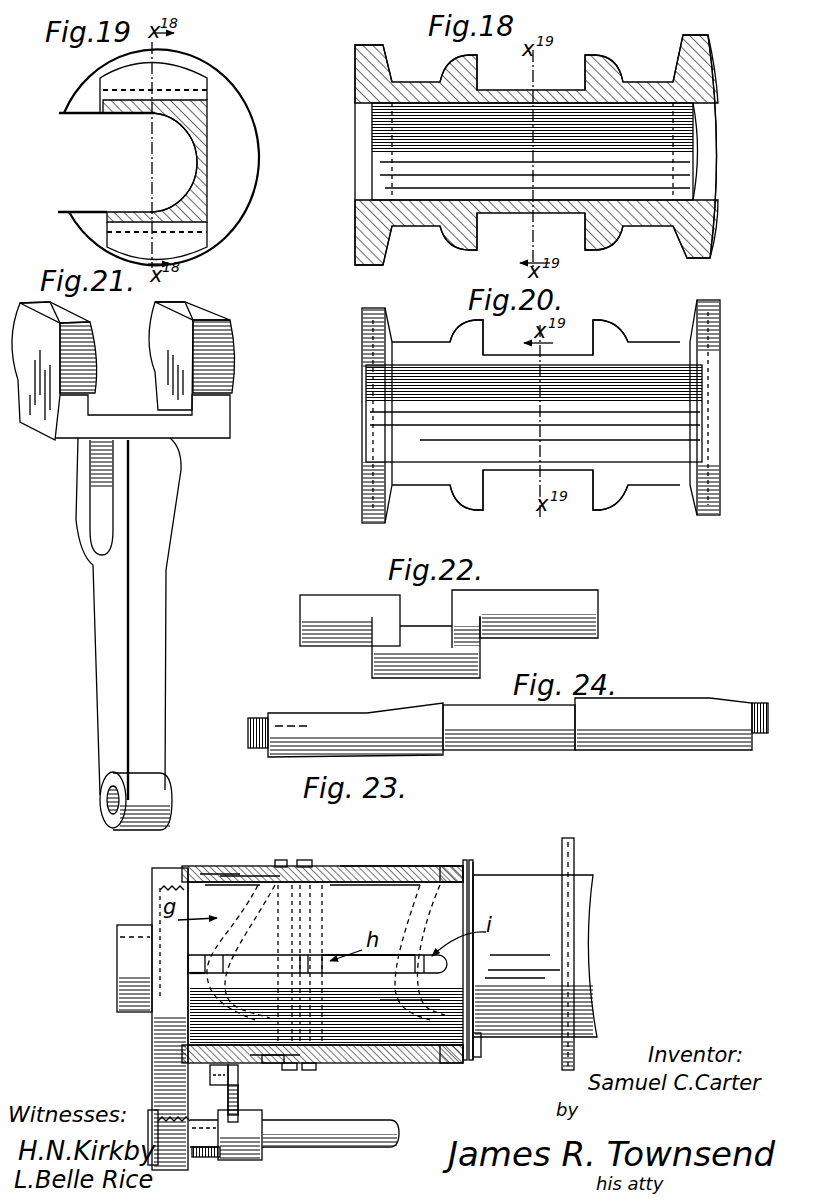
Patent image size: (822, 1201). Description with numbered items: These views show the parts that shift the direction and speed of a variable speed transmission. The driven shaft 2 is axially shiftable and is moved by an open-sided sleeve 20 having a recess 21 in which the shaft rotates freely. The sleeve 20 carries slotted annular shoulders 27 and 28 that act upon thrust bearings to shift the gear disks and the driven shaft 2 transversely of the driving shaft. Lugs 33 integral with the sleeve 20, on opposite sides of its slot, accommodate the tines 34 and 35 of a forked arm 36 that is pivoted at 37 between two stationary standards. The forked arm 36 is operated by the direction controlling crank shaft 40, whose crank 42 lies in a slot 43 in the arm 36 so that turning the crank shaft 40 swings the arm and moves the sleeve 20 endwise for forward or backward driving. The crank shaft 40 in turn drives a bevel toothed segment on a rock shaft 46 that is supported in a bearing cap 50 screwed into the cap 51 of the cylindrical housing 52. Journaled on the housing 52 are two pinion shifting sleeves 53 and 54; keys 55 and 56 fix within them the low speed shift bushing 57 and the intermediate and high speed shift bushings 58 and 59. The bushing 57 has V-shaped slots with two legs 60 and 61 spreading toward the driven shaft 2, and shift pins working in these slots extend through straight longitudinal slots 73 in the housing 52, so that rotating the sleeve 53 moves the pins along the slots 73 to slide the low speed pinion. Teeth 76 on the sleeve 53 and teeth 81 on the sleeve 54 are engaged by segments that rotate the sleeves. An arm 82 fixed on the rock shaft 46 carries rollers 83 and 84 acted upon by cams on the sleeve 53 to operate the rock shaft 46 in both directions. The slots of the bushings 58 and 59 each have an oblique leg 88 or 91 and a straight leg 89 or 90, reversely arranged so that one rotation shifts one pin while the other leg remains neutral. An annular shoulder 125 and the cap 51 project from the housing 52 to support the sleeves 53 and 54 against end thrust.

In FIG. 24, the driven shaft 2 is at (592, 756).
In FIG. 19, the open-sided sleeve 20 is at (262, 182).
In FIG. 18, the open-sided sleeve 20 is at (628, 68).
In FIG. 20, the open-sided sleeve 20 is at (597, 478).
In FIG. 19, the recess 21 is at (173, 162).
In FIG. 18, the recess 21 is at (535, 151).
In FIG. 20, the recess 21 is at (534, 413).
In FIG. 19, the slotted annular shoulder 27 is at (230, 115).
In FIG. 18, the slotted annular shoulder 27 is at (369, 262).
In FIG. 20, the slotted annular shoulder 27 is at (365, 486).
In FIG. 18, the slotted annular shoulder 28 is at (707, 257).
In FIG. 20, the slotted annular shoulder 28 is at (720, 482).
In FIG. 19, the lug 33 is at (165, 78).
In FIG. 18, the lug 33 is at (456, 68).
In FIG. 20, the lug 33 is at (469, 341).
In FIG. 21, the tine 34 is at (54, 371).
In FIG. 21, the tine 35 is at (192, 356).
In FIG. 21, the forked arm 36 is at (146, 601).
In FIG. 21, the pivot 37 is at (107, 800).
In FIG. 22, the direction controlling crank shaft 40 is at (352, 585).
In FIG. 22, the crank 42 is at (417, 637).
In FIG. 21, the slot 43 is at (105, 497).
In FIG. 23, the rock shaft 46 is at (347, 1122).
In FIG. 23, the bearing cap 50 is at (207, 1158).
In FIG. 23, the cap 51 is at (153, 1032).
In FIG. 23, the cylindrical housing 52 is at (387, 900).
In FIG. 23, the pinion shifting sleeve 53 is at (218, 866).
In FIG. 23, the pinion shifting sleeve 54 is at (345, 866).
In FIG. 23, the key 55 is at (243, 876).
In FIG. 23, the key 56 is at (272, 1048).
In FIG. 23, the low speed shift bushing 57 is at (228, 874).
In FIG. 23, the intermediate speed shift bushing 58 is at (383, 876).
In FIG. 23, the high speed shift bushing 59 is at (456, 866).
In FIG. 23, the leg 60 is at (188, 977).
In FIG. 23, the leg 61 is at (242, 900).
In FIG. 23, the longitudinal slot 73 is at (233, 953).
In FIG. 23, the teeth 76 is at (289, 870).
In FIG. 23, the teeth 81 is at (301, 872).
In FIG. 23, the arm 82 is at (226, 1100).
In FIG. 23, the roller 83 is at (210, 1073).
In FIG. 23, the roller 84 is at (240, 1098).
In FIG. 23, the oblique leg 88 is at (317, 974).
In FIG. 23, the straight leg 89 is at (318, 898).
In FIG. 23, the leg 90 is at (425, 1004).
In FIG. 23, the oblique leg 91 is at (363, 951).
In FIG. 23, the annular shoulder 125 is at (475, 864).